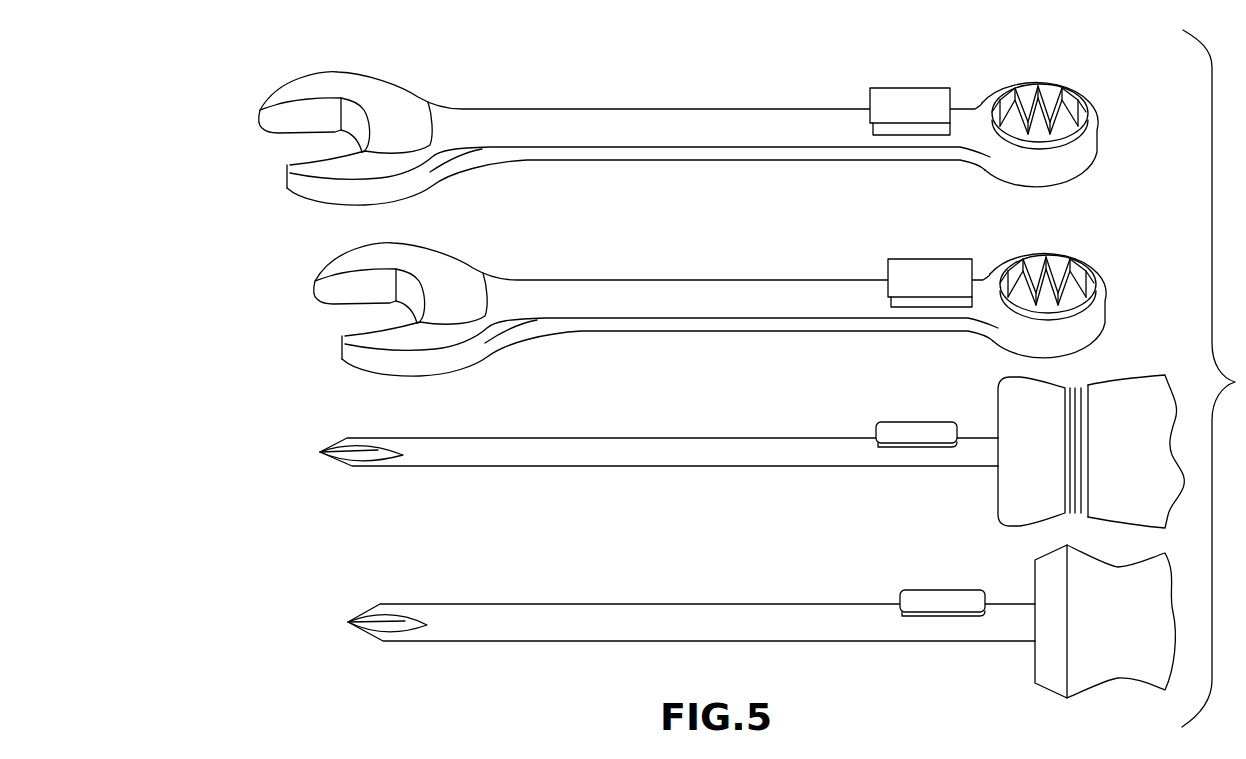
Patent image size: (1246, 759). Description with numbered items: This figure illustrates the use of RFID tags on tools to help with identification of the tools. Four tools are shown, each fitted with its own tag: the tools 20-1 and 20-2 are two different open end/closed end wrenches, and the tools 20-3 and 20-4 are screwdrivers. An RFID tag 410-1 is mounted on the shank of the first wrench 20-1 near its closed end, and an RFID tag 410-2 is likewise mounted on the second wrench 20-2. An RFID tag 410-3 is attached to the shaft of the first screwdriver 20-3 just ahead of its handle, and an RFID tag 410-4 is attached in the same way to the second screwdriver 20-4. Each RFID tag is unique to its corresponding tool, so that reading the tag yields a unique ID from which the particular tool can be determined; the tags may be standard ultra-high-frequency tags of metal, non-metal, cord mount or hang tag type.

The tool 20-1 is at (363, 73).
The tool 20-2 is at (452, 260).
The tool 20-3 is at (502, 437).
The tool 20-4 is at (457, 605).
The RFID tag 410-1 is at (927, 88).
The RFID tag 410-2 is at (945, 258).
The RFID tag 410-3 is at (933, 422).
The RFID tag 410-4 is at (935, 590).